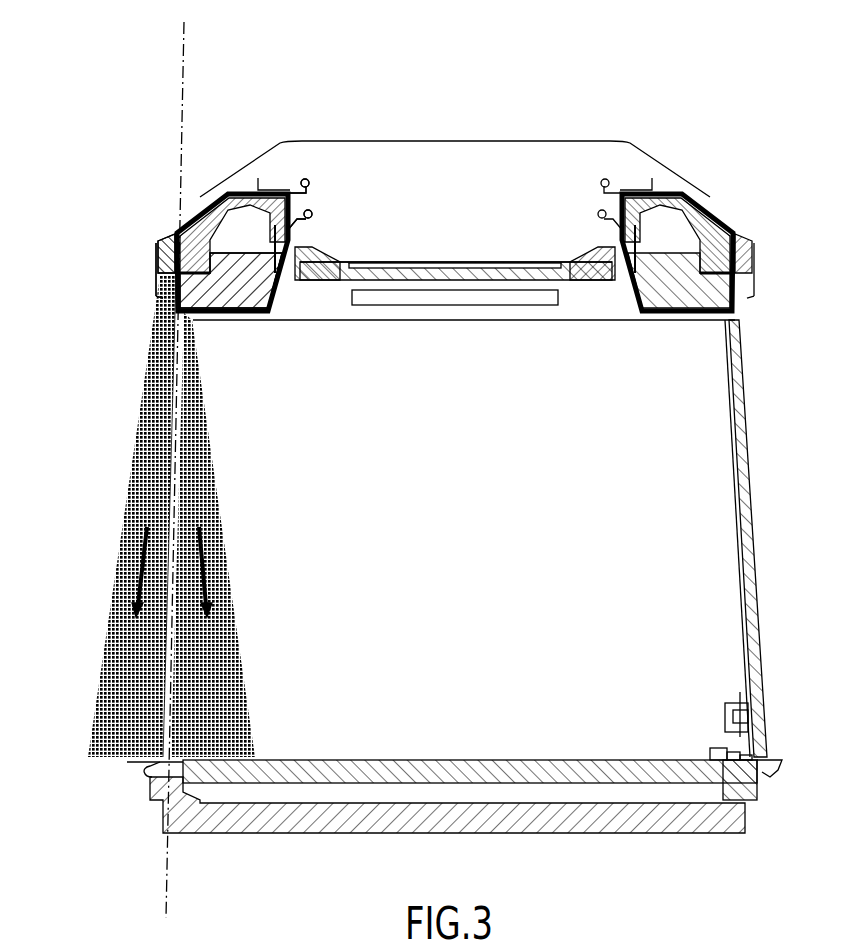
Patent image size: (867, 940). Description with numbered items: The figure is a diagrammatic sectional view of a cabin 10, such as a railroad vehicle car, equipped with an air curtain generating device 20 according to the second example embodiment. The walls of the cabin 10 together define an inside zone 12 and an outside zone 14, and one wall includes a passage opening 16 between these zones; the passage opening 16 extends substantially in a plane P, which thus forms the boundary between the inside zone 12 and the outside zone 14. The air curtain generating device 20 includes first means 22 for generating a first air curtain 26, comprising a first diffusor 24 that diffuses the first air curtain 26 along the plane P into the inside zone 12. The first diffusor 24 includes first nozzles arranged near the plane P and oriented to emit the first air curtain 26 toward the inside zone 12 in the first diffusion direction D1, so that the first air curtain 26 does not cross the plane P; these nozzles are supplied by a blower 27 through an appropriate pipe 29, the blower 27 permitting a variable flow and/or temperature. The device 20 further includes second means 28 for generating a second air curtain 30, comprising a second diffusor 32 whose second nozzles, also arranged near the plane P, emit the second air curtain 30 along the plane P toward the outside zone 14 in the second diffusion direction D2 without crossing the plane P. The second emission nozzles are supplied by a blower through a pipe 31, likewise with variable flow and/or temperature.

The cabin 10 is at (158, 120).
The inside zone 12 is at (463, 576).
The outside zone 14 is at (167, 516).
The passage opening 16 is at (172, 372).
The air curtain generating device 20 is at (253, 130).
The first means 22 is at (258, 340).
The first diffusor 24 is at (206, 334).
The first air curtain 26 is at (200, 478).
The blower 27 is at (362, 125).
The second means 28 is at (150, 231).
The pipe 29 is at (274, 292).
The second air curtain 30 is at (150, 478).
The pipe 31 is at (195, 210).
The second diffusor 32 is at (152, 308).
The plane P is at (184, 35).
The first diffusion direction D1 is at (210, 573).
The second diffusion direction D2 is at (138, 573).